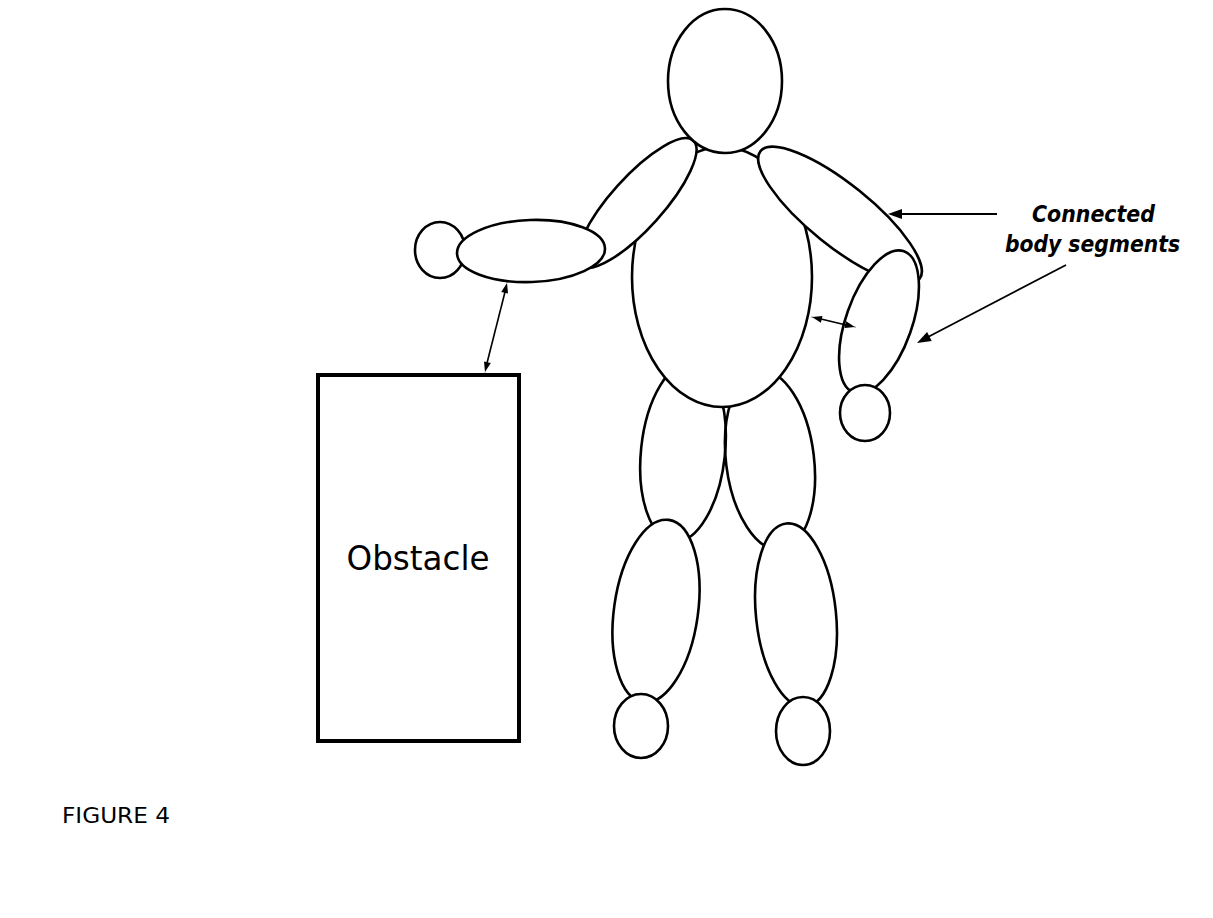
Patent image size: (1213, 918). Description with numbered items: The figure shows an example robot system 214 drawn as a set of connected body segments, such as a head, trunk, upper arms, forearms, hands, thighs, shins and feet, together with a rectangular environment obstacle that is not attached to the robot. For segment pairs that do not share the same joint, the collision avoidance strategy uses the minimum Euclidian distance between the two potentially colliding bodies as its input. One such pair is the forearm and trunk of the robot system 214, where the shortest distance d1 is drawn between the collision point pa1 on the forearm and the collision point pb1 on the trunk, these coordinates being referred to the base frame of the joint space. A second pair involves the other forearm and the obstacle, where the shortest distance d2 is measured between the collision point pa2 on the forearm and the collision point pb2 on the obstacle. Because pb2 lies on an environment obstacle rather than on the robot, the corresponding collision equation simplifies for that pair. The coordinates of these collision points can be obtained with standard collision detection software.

The robot system 214 is at (316, 144).
The minimum distance d1 is at (832, 340).
The minimum distance d2 is at (509, 327).
The collision point coordinates pa1 is at (875, 340).
The collision point coordinates pa2 is at (517, 266).
The collision point coordinates pb1 is at (792, 310).
The collision point coordinates pb2 is at (478, 388).